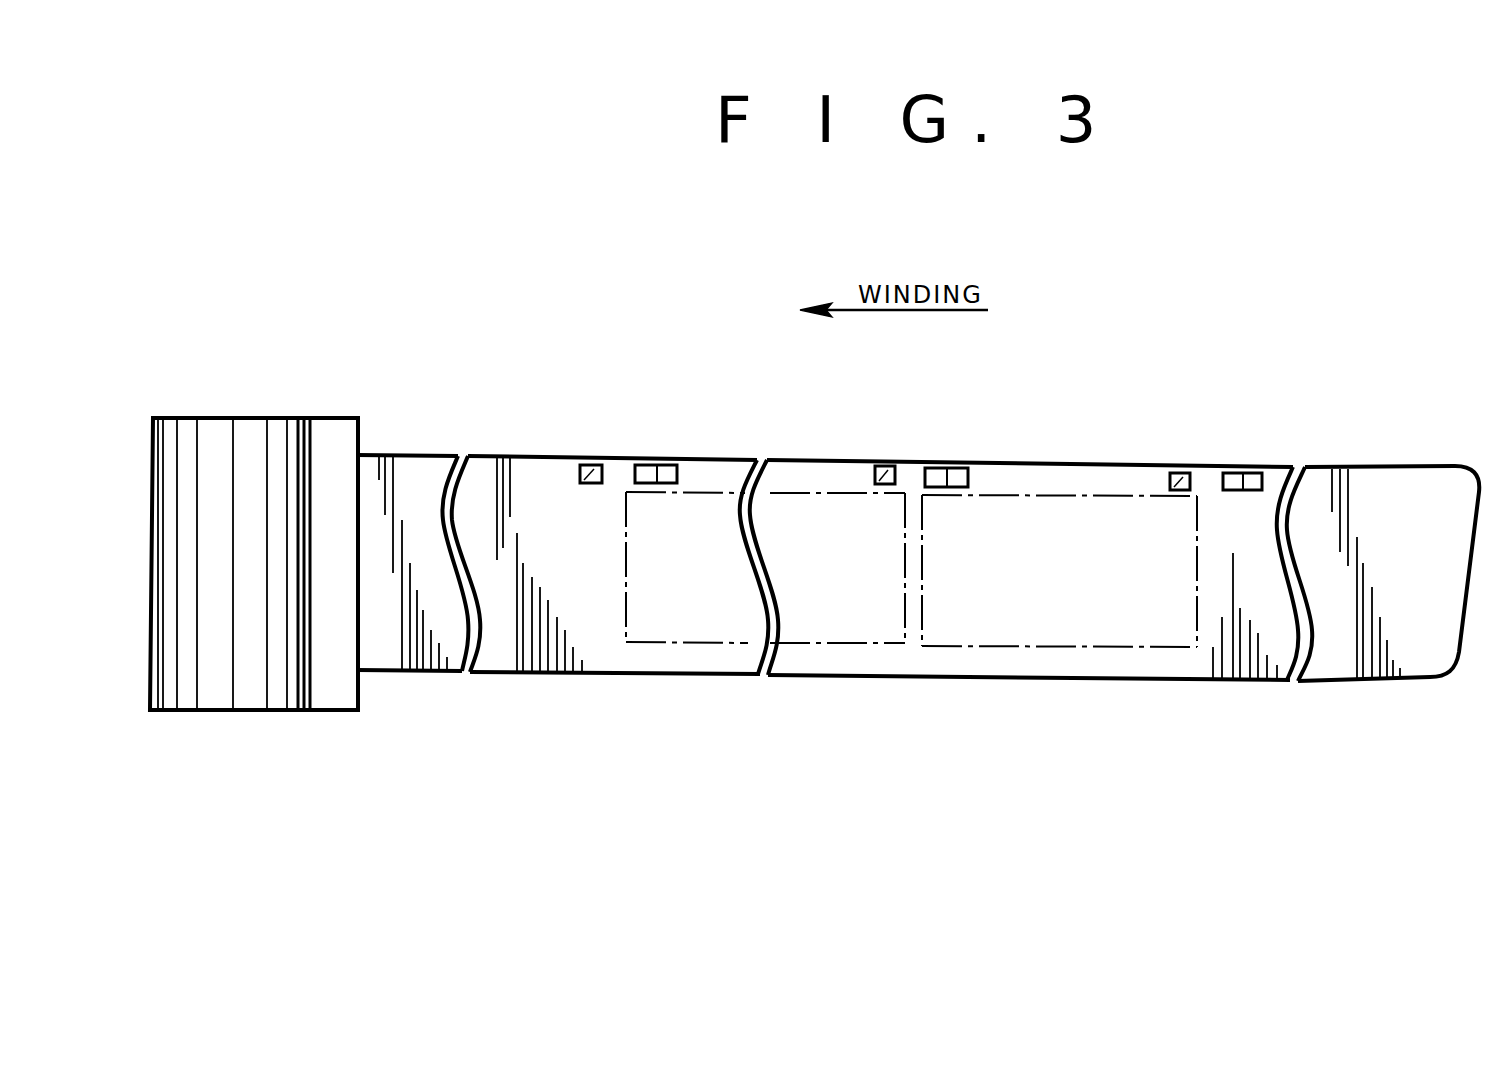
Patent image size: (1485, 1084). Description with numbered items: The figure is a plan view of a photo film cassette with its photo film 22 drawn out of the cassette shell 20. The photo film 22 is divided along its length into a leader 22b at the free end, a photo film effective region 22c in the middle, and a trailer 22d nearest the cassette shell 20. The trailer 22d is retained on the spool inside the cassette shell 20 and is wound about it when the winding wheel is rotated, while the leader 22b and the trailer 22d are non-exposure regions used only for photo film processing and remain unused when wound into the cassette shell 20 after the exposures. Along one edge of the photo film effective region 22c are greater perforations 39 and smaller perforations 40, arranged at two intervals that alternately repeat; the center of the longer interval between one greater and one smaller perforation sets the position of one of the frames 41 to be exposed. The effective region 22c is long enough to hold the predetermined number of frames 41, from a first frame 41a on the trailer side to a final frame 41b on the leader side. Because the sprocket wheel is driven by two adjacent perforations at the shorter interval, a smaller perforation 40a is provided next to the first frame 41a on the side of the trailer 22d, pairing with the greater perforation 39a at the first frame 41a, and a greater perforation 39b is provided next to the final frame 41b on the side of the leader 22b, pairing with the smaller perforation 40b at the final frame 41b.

The cassette shell 20 is at (242, 417).
The photo film 22 is at (1365, 465).
The leader 22b is at (1210, 714).
The photo film effective region 22c is at (610, 711).
The trailer 22d is at (366, 707).
The greater perforations 39 is at (950, 467).
The greater perforation 39a is at (658, 465).
The greater perforation 39b is at (1243, 472).
The smaller perforations 40 is at (882, 464).
The smaller perforation 40a is at (588, 463).
The smaller perforation 40b is at (1180, 472).
The frames 41 is at (905, 563).
The first frame 41a is at (626, 598).
The final frame 41b is at (920, 585).